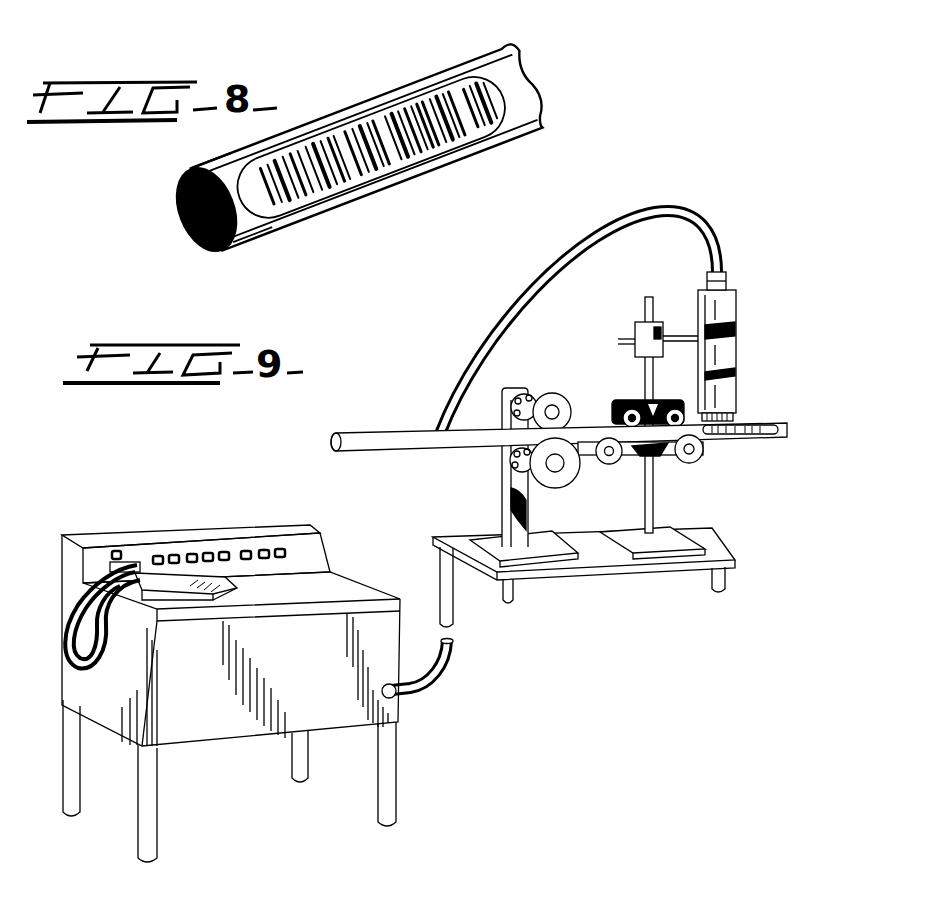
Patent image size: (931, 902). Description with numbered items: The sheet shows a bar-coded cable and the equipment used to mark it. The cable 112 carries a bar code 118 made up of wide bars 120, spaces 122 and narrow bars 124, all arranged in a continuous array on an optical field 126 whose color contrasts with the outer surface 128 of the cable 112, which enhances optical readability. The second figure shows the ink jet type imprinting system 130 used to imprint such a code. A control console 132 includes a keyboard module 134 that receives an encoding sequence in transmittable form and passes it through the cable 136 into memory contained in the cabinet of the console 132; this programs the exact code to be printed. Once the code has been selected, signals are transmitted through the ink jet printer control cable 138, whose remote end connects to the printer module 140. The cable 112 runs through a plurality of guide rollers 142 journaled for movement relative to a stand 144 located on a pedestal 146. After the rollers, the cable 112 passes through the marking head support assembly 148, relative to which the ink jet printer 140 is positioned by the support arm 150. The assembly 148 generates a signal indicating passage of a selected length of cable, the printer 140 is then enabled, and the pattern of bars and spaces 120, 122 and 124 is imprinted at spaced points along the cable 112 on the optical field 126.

In FIG. 8, the bar-coded cable 112 is at (206, 157).
In FIG. 9, the bar-coded cable 112 is at (593, 432).
In FIG. 8, the bar code 118 is at (379, 205).
In FIG. 8, the wide bars 120 is at (283, 153).
In FIG. 8, the spaces 122 is at (338, 135).
In FIG. 8, the narrow bars 124 is at (415, 112).
In FIG. 8, the optical field 126 is at (428, 155).
In FIG. 9, the optical field 126 is at (727, 436).
In FIG. 8, the outer surface 128 is at (246, 236).
In FIG. 9, the ink jet type imprinting system 130 is at (656, 495).
In FIG. 9, the control console 132 is at (60, 597).
In FIG. 9, the keyboard module 134 is at (158, 577).
In FIG. 9, the cable 136 is at (110, 655).
In FIG. 9, the ink jet printer control cable 138 is at (430, 689).
In FIG. 9, the printer module 140 is at (725, 348).
In FIG. 9, the guide rollers 142 is at (557, 489).
In FIG. 9, the stand 144 is at (511, 494).
In FIG. 9, the pedestal 146 is at (555, 557).
In FIG. 9, the marking head support assembly 148 is at (633, 398).
In FIG. 9, the support arm 150 is at (680, 336).